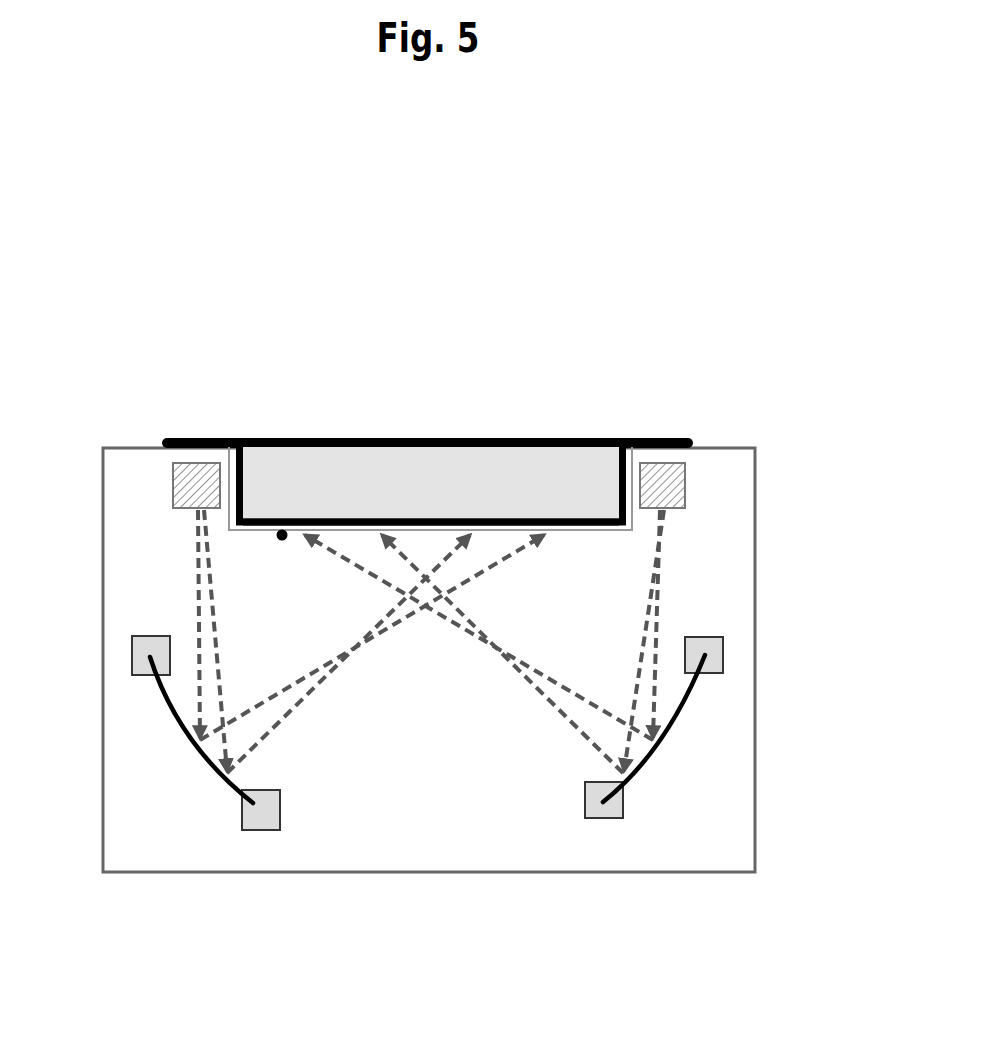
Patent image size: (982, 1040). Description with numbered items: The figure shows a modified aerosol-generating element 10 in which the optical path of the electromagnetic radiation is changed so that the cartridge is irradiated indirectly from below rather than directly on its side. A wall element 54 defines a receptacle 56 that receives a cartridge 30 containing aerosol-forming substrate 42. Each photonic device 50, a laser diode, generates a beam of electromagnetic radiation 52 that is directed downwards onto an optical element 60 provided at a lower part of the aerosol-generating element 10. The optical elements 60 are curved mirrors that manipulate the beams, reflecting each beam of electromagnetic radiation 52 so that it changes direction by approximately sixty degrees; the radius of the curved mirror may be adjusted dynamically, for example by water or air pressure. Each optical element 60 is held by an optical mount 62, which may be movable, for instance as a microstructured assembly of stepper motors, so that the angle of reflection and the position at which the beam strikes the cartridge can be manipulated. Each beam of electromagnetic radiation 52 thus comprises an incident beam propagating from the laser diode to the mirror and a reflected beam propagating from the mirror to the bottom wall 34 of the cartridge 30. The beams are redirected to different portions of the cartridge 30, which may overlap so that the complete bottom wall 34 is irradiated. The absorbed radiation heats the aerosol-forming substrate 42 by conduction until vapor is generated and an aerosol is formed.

The aerosol-generating element 10 is at (172, 308).
The cartridge 30 is at (482, 433).
The bottom wall 34 is at (567, 527).
The aerosol-forming substrate 42 is at (538, 473).
The photonic device 50 is at (653, 483).
The beam of electromagnetic radiation 52 is at (655, 540).
The wall element 54 is at (152, 450).
The receptacle 56 is at (283, 528).
The optical element 60 is at (692, 720).
The optical mount 62 is at (718, 638).